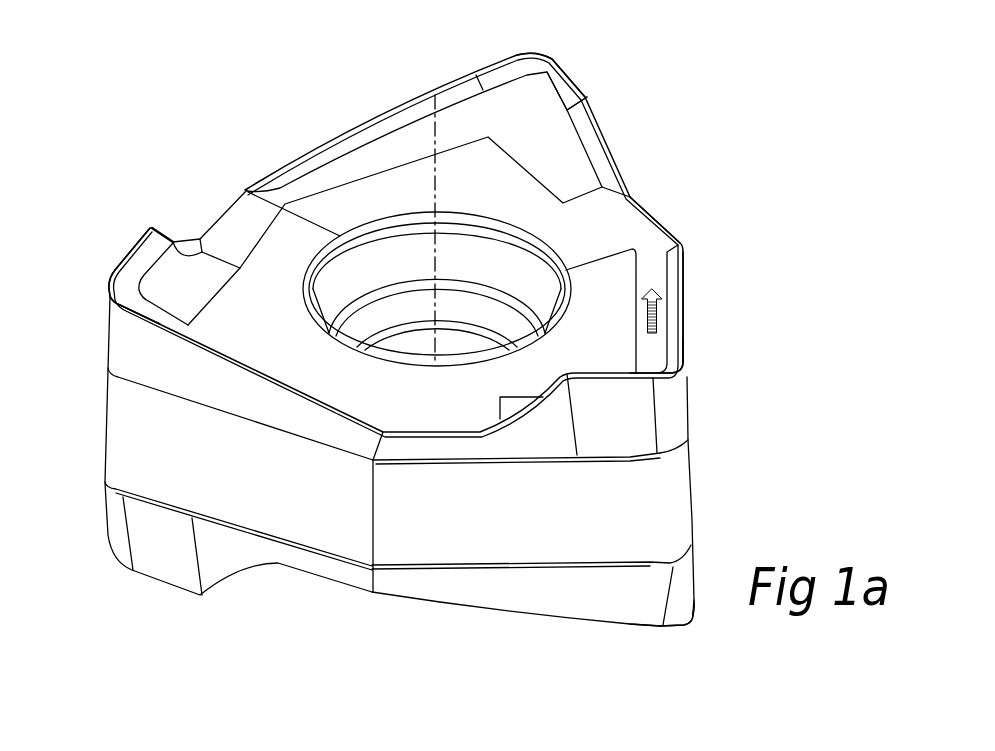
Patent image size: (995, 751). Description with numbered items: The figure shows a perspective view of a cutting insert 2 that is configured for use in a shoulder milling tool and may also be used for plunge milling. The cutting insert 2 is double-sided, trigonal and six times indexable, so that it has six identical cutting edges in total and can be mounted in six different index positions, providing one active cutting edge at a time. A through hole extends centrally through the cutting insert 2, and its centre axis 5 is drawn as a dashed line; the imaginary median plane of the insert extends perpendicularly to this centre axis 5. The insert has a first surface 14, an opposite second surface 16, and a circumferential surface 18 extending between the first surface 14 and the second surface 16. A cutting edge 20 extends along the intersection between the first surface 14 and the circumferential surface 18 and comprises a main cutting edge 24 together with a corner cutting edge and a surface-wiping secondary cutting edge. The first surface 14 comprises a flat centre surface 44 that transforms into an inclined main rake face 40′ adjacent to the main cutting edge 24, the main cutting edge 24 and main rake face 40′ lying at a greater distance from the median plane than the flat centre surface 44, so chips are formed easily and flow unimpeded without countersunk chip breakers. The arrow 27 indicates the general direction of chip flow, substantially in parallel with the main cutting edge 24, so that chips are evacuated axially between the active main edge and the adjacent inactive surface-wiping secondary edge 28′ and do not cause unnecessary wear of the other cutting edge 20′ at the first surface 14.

The cutting insert 2 is at (243, 162).
The first surface 14 is at (350, 167).
The centre axis 5 is at (437, 112).
The flat centre surface 44 is at (497, 191).
The further cutting edge 20′ is at (505, 50).
The inactive surface-wiping secondary edge 28′ is at (578, 83).
The inclined main rake face 40′ is at (672, 263).
The arrow 27 is at (655, 310).
The main cutting edge 24 is at (685, 327).
The cutting edge 20 is at (637, 390).
The circumferential surface 18 is at (143, 434).
The second surface 16 is at (350, 589).